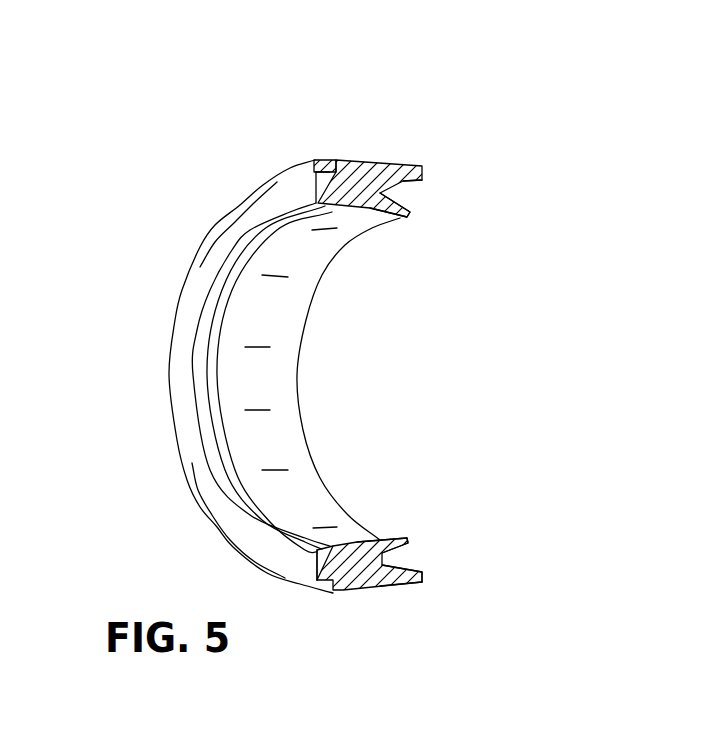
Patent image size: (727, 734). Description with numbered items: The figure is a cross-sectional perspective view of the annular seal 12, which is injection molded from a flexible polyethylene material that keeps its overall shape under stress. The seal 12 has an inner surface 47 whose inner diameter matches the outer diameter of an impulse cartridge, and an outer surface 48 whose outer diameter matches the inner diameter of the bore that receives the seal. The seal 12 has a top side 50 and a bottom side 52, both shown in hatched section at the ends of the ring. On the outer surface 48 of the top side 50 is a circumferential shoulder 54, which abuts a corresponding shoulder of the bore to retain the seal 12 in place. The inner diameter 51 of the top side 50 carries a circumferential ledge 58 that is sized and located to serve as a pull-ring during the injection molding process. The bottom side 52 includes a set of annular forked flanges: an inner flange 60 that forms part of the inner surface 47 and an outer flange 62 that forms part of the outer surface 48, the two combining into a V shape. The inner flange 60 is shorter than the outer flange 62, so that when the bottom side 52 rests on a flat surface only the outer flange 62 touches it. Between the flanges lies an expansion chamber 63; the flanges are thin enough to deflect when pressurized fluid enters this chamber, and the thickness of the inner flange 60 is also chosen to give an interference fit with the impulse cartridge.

The seal 12 is at (430, 113).
The inner surface 47 is at (372, 542).
The outer surface 48 is at (368, 165).
The top side 50 is at (191, 295).
The inner diameter 51 is at (202, 405).
The bottom side 52 is at (424, 580).
The circumferential shoulder 54 is at (323, 163).
The circumferential ledge 58 is at (332, 543).
The inner flange 60 is at (402, 218).
The outer flange 62 is at (402, 586).
The expansion chamber 63 is at (405, 181).